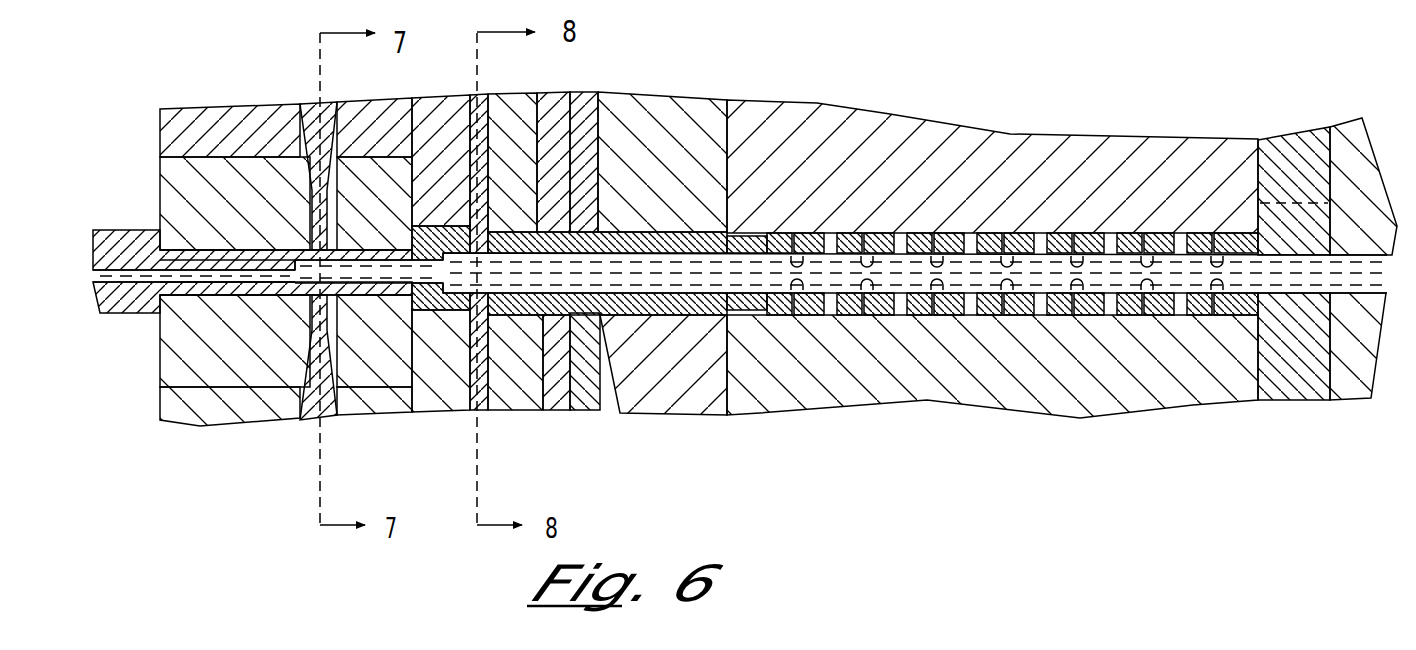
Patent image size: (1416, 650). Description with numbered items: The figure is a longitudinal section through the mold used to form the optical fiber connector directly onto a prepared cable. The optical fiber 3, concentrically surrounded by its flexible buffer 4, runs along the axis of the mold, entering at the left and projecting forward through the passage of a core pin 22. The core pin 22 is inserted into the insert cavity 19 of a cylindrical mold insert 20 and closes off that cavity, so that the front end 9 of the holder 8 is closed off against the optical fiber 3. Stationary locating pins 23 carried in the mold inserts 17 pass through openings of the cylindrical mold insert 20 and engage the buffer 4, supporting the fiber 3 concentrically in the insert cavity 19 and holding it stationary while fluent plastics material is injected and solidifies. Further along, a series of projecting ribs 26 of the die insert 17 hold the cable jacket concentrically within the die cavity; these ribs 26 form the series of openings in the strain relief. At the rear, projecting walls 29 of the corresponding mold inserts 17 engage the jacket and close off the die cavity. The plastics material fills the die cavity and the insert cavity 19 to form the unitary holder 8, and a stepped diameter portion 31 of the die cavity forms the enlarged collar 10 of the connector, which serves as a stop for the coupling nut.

The optical fiber 3 is at (133, 270).
The flexible buffer 4 is at (507, 282).
The holder 8 is at (441, 216).
The front end of the holder 9 is at (277, 290).
The collar 10 is at (553, 217).
The mold insert 17 is at (1298, 150).
The insert cavity 19 is at (364, 285).
The cylindrical mold insert 20 is at (152, 193).
The core pin 22 is at (216, 238).
The locating pin 23 is at (318, 160).
The projecting rib 26 is at (757, 243).
The projecting wall 29 is at (1258, 165).
The stepped diameter portion 31 is at (554, 322).